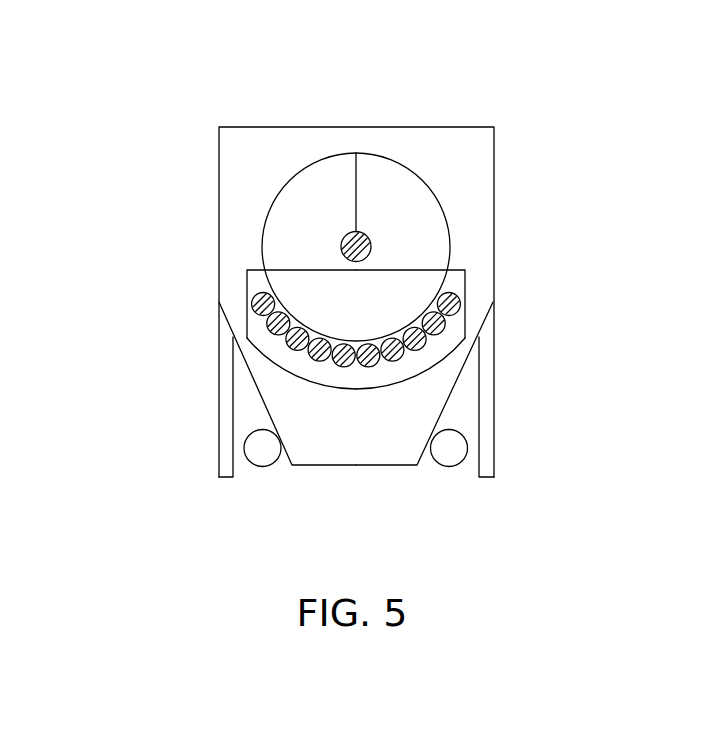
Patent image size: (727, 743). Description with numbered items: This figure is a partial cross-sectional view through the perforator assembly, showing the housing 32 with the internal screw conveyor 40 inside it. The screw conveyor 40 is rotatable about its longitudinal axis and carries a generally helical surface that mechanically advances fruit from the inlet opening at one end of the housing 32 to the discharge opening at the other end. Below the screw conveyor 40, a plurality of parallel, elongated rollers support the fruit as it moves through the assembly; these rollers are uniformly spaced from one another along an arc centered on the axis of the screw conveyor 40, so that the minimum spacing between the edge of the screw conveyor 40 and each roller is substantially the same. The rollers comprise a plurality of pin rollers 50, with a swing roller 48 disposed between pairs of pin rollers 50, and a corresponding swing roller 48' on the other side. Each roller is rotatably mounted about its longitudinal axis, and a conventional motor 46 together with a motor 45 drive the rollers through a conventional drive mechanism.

The housing 32 is at (494, 182).
The screw conveyor 40 is at (385, 213).
The guide roller 45 is at (448, 457).
The motor 46 is at (265, 457).
The swing roller 48 is at (207, 367).
The bearing bracket 48' is at (490, 367).
The pin rollers 50 is at (252, 303).